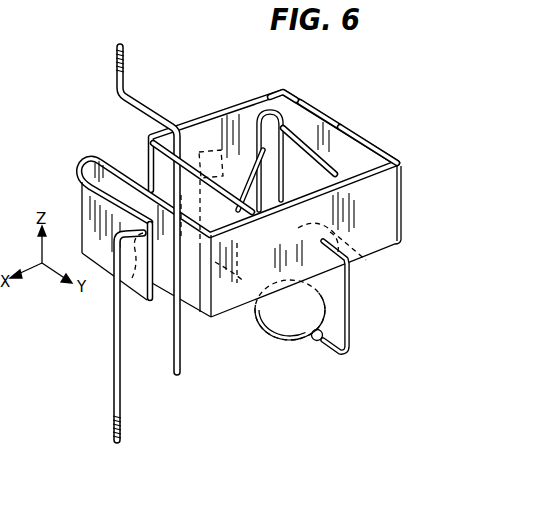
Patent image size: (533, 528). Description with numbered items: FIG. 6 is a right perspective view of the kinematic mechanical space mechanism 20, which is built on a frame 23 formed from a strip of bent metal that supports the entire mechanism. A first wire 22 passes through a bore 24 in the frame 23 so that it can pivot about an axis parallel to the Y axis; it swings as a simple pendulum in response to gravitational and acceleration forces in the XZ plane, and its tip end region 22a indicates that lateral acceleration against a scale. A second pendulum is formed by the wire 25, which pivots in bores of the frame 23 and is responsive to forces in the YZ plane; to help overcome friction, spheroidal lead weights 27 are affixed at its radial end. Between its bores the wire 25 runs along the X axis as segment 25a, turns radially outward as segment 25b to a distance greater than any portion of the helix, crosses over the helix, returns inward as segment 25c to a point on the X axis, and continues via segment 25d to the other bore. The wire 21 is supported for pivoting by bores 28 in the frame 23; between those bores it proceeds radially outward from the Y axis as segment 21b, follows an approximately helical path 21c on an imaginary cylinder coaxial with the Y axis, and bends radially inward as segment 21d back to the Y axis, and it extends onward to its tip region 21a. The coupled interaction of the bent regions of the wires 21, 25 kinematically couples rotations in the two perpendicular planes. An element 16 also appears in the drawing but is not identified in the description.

The contact 16 is at (220, 165).
The kinematic mechanical space mechanism 20 is at (400, 111).
The wire 21 is at (124, 46).
The tip region 21a is at (116, 68).
The segment 21b is at (215, 263).
The helix segment 21c is at (267, 90).
The segment 21d is at (341, 125).
The first wire 22 is at (119, 446).
The tip end region 22a is at (121, 428).
The frame 23 is at (400, 205).
The bore 24 is at (145, 305).
The wire 25 is at (349, 313).
The wire segment 25a is at (252, 150).
The wire segment 25b is at (282, 90).
The wire segment 25c is at (301, 110).
The wire segment 25d is at (368, 262).
The weights 27 is at (262, 312).
The bores 28 is at (347, 177).